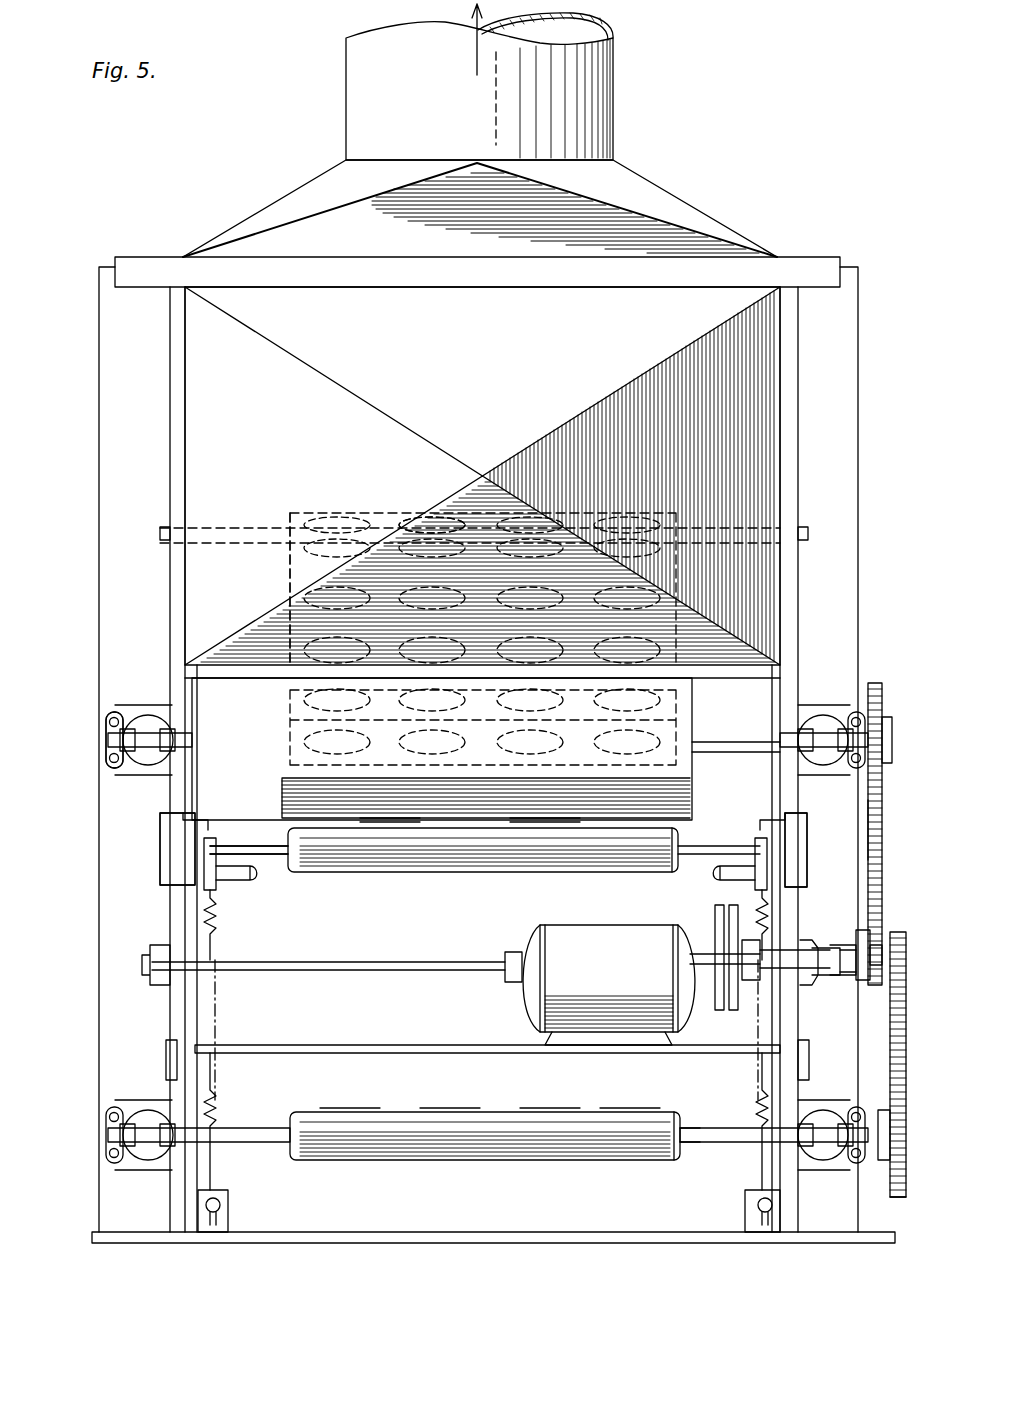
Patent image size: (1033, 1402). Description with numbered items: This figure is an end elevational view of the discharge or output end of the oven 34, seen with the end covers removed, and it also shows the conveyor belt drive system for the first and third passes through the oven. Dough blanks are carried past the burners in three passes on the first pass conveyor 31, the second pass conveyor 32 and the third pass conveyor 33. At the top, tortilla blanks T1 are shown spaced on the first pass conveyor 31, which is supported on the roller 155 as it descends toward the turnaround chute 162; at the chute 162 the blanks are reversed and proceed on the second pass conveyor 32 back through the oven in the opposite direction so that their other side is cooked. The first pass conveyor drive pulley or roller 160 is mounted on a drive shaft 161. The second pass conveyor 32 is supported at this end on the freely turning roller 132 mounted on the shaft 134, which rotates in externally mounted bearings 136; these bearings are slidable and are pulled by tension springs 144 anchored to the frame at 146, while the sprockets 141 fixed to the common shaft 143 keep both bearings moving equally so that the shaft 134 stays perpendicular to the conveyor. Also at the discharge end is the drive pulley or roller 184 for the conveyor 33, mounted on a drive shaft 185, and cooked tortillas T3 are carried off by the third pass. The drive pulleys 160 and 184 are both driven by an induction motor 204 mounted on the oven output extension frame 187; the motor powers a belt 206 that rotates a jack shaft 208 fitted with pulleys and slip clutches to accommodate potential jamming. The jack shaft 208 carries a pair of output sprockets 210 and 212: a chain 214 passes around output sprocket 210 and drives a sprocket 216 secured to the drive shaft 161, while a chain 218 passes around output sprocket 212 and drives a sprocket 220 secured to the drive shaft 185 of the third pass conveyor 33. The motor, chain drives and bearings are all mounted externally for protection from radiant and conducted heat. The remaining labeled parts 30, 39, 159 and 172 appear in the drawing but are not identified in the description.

The dryer apparatus 30 is at (768, 172).
The first pass conveyor 31 is at (292, 640).
The second pass conveyor 32 is at (380, 860).
The third pass conveyor 33 is at (400, 1150).
The oven 34 is at (820, 488).
The exhaust duct 39 is at (612, 73).
The live roller 132 is at (680, 835).
The spindle 134 is at (246, 845).
The bearing members 136 is at (187, 850).
The sprockets 141 is at (215, 885).
The common shaft 143 is at (252, 880).
The tension springs 144 is at (215, 928).
The frame anchor 146 is at (222, 1205).
The roller 155 is at (288, 515).
The bearing plate 159 is at (108, 745).
The drive pulley 160 is at (690, 710).
The drive shaft 161 is at (730, 742).
The turnaround chute 162 is at (690, 780).
The shaft bearing 172 is at (110, 738).
The drive pulley 184 is at (688, 1118).
The drive shaft 185 is at (688, 1148).
The oven output extension frame 187 is at (410, 1045).
The induction motor 204 is at (609, 985).
The belt 206 is at (742, 995).
The jack shaft 208 is at (455, 958).
The output sprocket 210 is at (858, 975).
The output sprocket 212 is at (888, 942).
The chain 214 is at (882, 830).
The sprocket 216 is at (882, 702).
The chain 218 is at (900, 1075).
The sprocket 220 is at (885, 1195).
The tortilla blanks T1 is at (395, 522).
The cooked tortillas T3 is at (405, 1118).